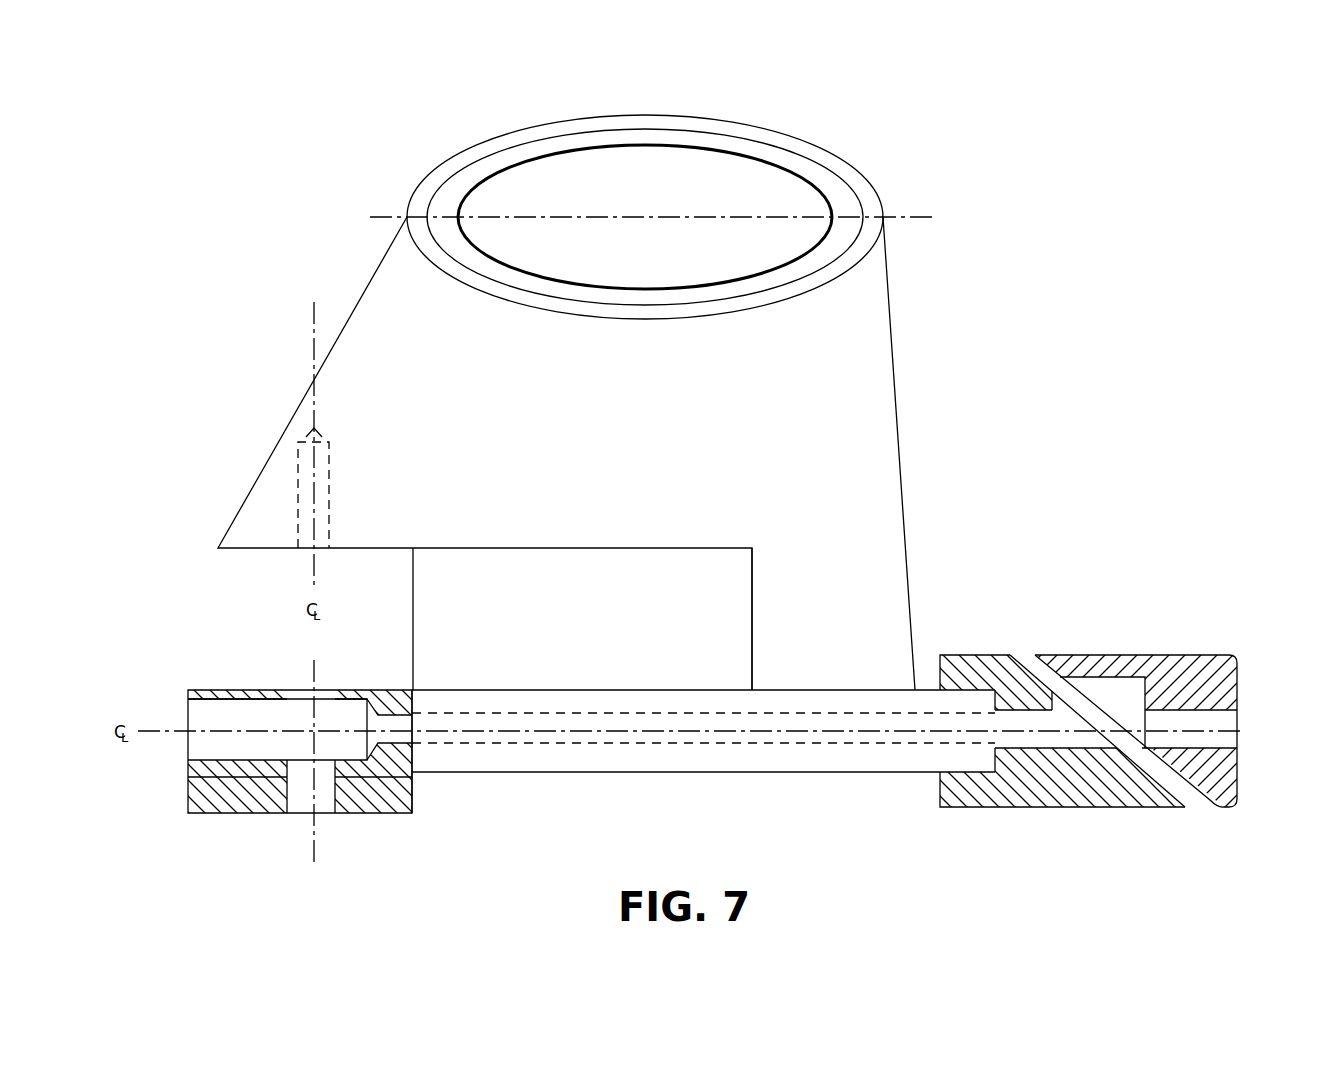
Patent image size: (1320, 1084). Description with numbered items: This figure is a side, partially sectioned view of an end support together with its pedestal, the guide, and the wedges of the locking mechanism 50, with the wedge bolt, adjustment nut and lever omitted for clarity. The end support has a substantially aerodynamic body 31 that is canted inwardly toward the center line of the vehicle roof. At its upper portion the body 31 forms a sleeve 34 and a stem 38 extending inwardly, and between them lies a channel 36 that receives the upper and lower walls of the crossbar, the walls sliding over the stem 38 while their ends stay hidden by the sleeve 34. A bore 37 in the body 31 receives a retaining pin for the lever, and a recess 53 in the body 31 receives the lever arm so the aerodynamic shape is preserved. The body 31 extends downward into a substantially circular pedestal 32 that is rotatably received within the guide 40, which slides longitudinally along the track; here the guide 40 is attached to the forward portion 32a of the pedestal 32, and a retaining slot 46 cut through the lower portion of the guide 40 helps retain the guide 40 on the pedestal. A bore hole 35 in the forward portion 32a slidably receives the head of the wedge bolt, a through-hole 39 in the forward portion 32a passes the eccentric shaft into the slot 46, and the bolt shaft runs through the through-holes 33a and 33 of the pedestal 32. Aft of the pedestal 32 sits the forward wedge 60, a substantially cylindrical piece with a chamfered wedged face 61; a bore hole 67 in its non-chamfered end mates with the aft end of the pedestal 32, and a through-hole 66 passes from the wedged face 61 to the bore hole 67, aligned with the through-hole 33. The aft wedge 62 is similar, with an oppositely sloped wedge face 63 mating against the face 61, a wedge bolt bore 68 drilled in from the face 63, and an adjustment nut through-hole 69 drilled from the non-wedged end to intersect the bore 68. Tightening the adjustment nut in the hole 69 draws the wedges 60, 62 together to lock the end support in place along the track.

The body 31 is at (868, 378).
The pedestal 32 is at (612, 757).
The forward portion of the pedestal 32a is at (393, 810).
The through-hole 33 is at (723, 738).
The through-hole 33a is at (402, 737).
The sleeve 34 is at (584, 124).
The bore hole 35 is at (200, 743).
The channel 36 is at (677, 140).
The bore 37 is at (305, 480).
The stem 38 is at (750, 193).
The through-hole 39 is at (325, 692).
The guide 40 is at (257, 818).
The retaining slot 46 is at (331, 806).
The locking mechanism 50 is at (1050, 823).
The recess 53 is at (603, 578).
The forward wedge 60 is at (1080, 790).
The wedged face 61 is at (1180, 793).
The aft wedge 62 is at (1223, 662).
The wedge face 63 is at (1023, 662).
The through-hole 66 is at (1028, 740).
The bore hole 67 is at (933, 776).
The wedge bolt bore 68 is at (1100, 690).
The adjustment nut through-hole 69 is at (1233, 740).